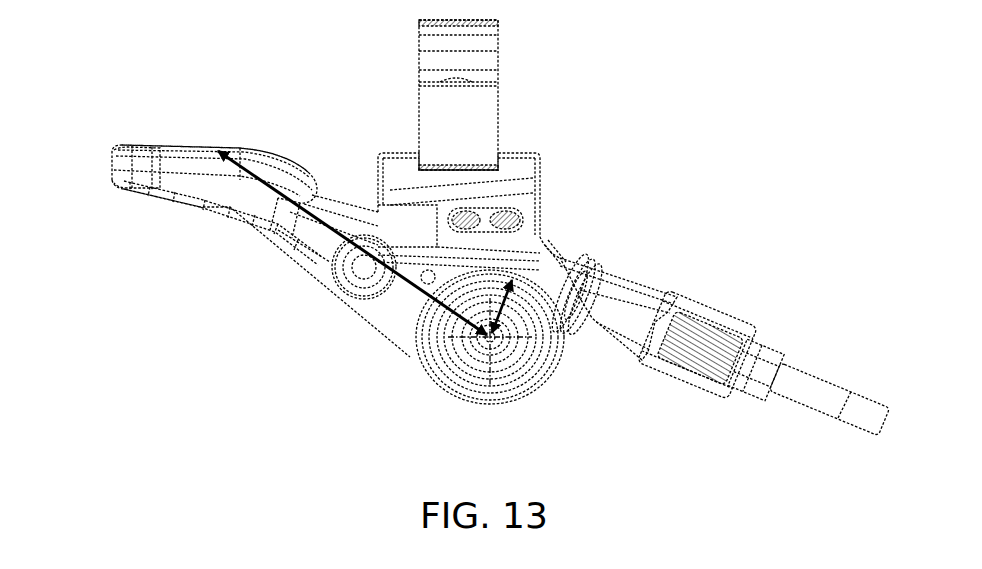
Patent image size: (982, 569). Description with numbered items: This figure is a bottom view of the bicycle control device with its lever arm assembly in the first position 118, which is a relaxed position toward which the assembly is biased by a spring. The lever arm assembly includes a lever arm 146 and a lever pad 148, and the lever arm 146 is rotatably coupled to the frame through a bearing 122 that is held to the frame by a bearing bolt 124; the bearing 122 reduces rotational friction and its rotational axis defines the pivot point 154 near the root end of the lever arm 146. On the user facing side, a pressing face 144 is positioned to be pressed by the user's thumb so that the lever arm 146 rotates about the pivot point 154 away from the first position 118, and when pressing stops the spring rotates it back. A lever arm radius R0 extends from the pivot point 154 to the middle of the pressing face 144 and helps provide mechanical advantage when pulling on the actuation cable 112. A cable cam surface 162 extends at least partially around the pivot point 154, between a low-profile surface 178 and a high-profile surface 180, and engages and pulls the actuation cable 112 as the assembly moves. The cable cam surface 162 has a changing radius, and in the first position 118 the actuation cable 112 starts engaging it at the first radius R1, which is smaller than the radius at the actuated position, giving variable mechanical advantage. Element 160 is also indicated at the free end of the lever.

The actuation cable 112 is at (558, 284).
The first position 118 is at (205, 312).
The bearing 122 is at (485, 383).
The bearing bolt 124 is at (513, 358).
The pressing face 144 is at (195, 147).
The lever arm 146 is at (208, 190).
The lever pad 148 is at (272, 162).
The pivot point 154 is at (487, 344).
The lever free end 160 is at (104, 168).
The cable cam surface 162 is at (572, 318).
The low-profile surface 178 is at (535, 282).
The high-profile surface 180 is at (568, 308).
The lever arm radius R0 is at (410, 283).
The first radius R1 is at (507, 313).